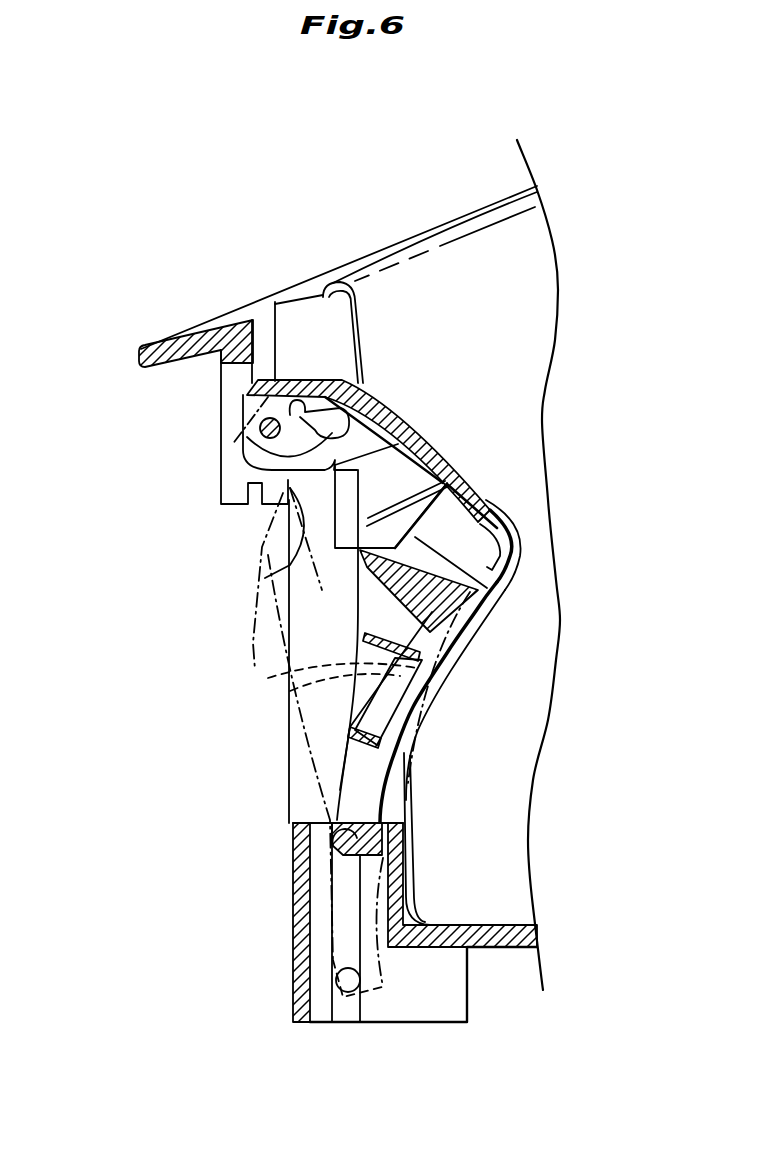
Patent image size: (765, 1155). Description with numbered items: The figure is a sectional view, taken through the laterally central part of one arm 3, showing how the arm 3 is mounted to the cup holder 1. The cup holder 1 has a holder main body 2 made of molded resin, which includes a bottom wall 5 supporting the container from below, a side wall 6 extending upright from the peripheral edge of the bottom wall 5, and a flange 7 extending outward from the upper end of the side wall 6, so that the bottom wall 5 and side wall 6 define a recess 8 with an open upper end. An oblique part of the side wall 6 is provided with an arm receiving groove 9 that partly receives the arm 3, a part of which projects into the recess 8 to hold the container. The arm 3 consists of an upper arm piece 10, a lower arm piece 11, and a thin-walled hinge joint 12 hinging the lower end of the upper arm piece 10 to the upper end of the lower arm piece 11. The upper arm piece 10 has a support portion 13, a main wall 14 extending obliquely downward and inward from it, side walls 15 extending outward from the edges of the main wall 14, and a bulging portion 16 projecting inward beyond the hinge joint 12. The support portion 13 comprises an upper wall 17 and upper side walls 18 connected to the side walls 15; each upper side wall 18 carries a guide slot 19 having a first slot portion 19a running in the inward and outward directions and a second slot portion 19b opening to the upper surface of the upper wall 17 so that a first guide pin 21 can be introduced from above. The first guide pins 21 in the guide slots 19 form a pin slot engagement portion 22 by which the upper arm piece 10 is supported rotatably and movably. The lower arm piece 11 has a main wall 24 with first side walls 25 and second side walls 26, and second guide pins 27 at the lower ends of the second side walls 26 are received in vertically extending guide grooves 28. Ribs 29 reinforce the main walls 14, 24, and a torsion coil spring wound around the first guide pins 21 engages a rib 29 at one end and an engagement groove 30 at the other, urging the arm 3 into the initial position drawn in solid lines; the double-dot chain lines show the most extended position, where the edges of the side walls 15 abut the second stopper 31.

The cup holder 1 is at (130, 140).
The holder main body 2 is at (195, 324).
The arm 3 is at (484, 622).
The bottom wall 5 is at (498, 948).
The side wall 6 is at (298, 922).
The flange 7 is at (142, 357).
The recess 8 is at (487, 294).
The arm receiving groove 9 is at (214, 420).
The upper arm piece 10 is at (426, 425).
The lower arm piece 11 is at (460, 652).
The hinge joint 12 is at (510, 540).
The support portion 13 is at (337, 198).
The main wall 14 is at (407, 420).
The side walls 15 is at (468, 530).
The bulging portion 16 is at (513, 528).
The upper wall 17 is at (307, 410).
The upper side walls 18 is at (263, 407).
The guide slot 19 is at (127, 457).
The first slot portion 19a is at (268, 470).
The second slot portion 19b is at (325, 432).
The first guide pins 21 is at (260, 428).
The pin slot engagement portion 22 is at (77, 423).
The main wall 24 is at (405, 713).
The first side walls 25 is at (480, 587).
The second side walls 26 is at (408, 797).
The second guide pins 27 is at (332, 838).
The guide groove 28 is at (357, 1003).
The ribs 29 is at (405, 472).
The engagement groove 30 is at (258, 500).
The second stopper 31 is at (290, 568).